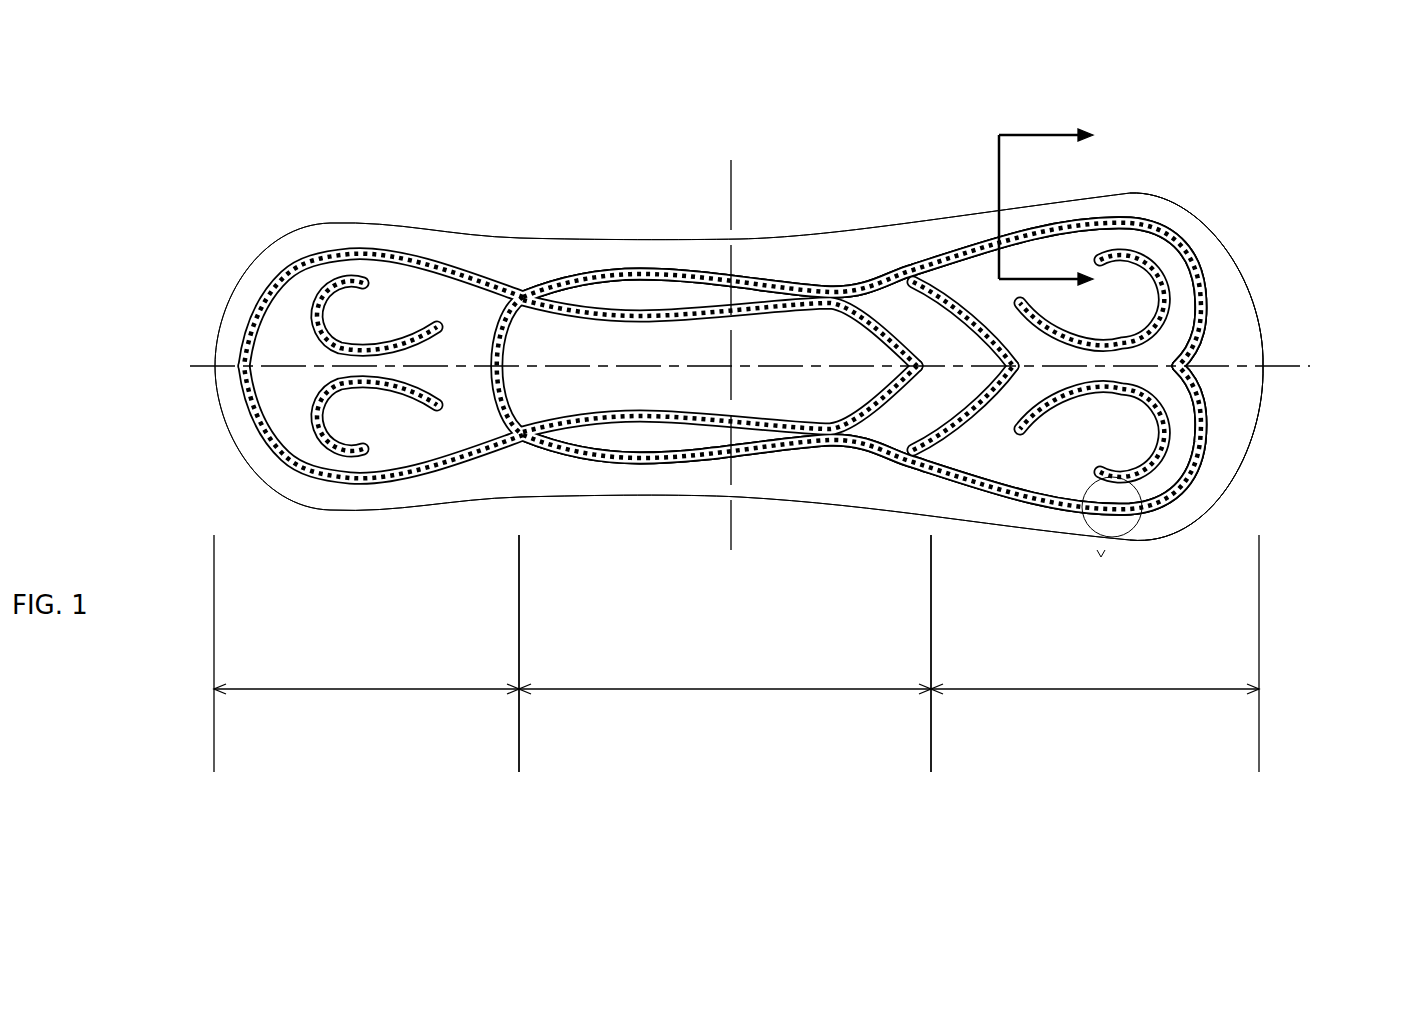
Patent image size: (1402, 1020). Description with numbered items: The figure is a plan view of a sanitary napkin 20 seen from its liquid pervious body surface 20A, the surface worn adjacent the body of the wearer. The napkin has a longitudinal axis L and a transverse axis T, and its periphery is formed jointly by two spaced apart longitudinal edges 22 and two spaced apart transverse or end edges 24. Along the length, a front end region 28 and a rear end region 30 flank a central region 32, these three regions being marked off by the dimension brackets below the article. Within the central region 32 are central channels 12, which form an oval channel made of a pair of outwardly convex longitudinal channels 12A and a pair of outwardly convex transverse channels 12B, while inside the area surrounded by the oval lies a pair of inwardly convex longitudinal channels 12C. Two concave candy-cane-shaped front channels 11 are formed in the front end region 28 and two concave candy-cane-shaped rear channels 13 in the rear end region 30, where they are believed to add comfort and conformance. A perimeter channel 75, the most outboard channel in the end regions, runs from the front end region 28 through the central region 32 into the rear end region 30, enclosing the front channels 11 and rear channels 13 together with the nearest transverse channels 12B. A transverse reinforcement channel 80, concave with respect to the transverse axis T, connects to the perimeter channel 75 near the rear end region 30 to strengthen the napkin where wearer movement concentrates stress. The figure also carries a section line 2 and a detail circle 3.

The sanitary napkin 20 is at (235, 201).
The liquid pervious body surface 20A is at (1213, 208).
The longitudinal edges 22 is at (878, 222).
The transverse or end edges 24 is at (208, 385).
The central channels 12 is at (777, 284).
The outwardly convex longitudinal channels 12A is at (588, 272).
The outwardly convex transverse channels 12B is at (510, 320).
The inwardly convex longitudinal channels 12C is at (663, 315).
The transverse reinforcement channel 80 is at (967, 290).
The perimeter channel 75 is at (1210, 318).
The front channels 11 is at (300, 420).
The rear channels 13 is at (1173, 290).
The longitudinal axis L is at (190, 358).
The transverse axis T is at (730, 195).
The section line 2- 2 is at (1046, 205).
The detail region of FIG. 3 is at (1127, 540).
The front end region 28 is at (365, 688).
The central region 32 is at (700, 688).
The rear end region 30 is at (1070, 688).